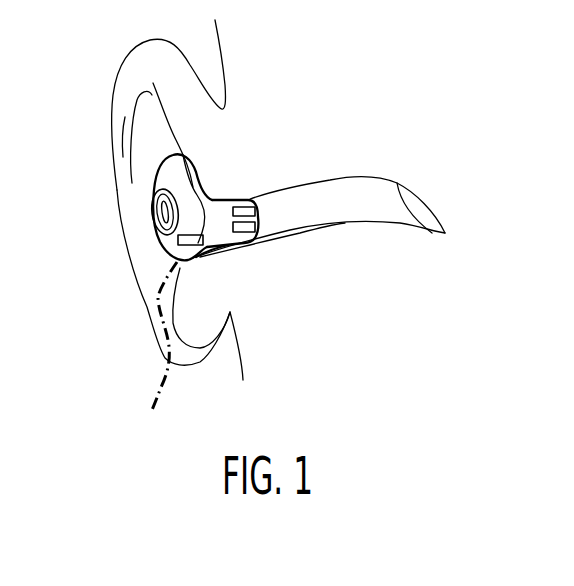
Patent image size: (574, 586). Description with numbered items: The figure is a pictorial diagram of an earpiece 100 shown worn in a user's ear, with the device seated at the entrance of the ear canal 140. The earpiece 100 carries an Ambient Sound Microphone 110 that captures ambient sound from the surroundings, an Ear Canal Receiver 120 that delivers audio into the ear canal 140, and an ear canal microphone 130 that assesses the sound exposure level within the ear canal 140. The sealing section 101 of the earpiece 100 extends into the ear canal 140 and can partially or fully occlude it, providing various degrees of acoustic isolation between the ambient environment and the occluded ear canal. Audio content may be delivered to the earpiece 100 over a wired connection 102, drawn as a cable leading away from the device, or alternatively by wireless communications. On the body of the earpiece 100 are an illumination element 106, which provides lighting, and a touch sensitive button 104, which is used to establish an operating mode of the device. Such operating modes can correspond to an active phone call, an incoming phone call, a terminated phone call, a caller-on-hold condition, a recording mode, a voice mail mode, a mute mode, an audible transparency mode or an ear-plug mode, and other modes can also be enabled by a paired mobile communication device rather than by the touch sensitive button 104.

The earpiece 100 is at (157, 178).
The sealing section 101 is at (213, 198).
The wired connection 102 is at (165, 329).
The touch sensitive button 104 is at (153, 212).
The illumination element 106 is at (172, 250).
The Ambient Sound Microphone (ASM) 110 is at (195, 256).
The Ear Canal Receiver (ECR) 120 is at (253, 241).
The ear canal microphone (ECM) 130 is at (245, 200).
The ear canal 140 is at (353, 187).